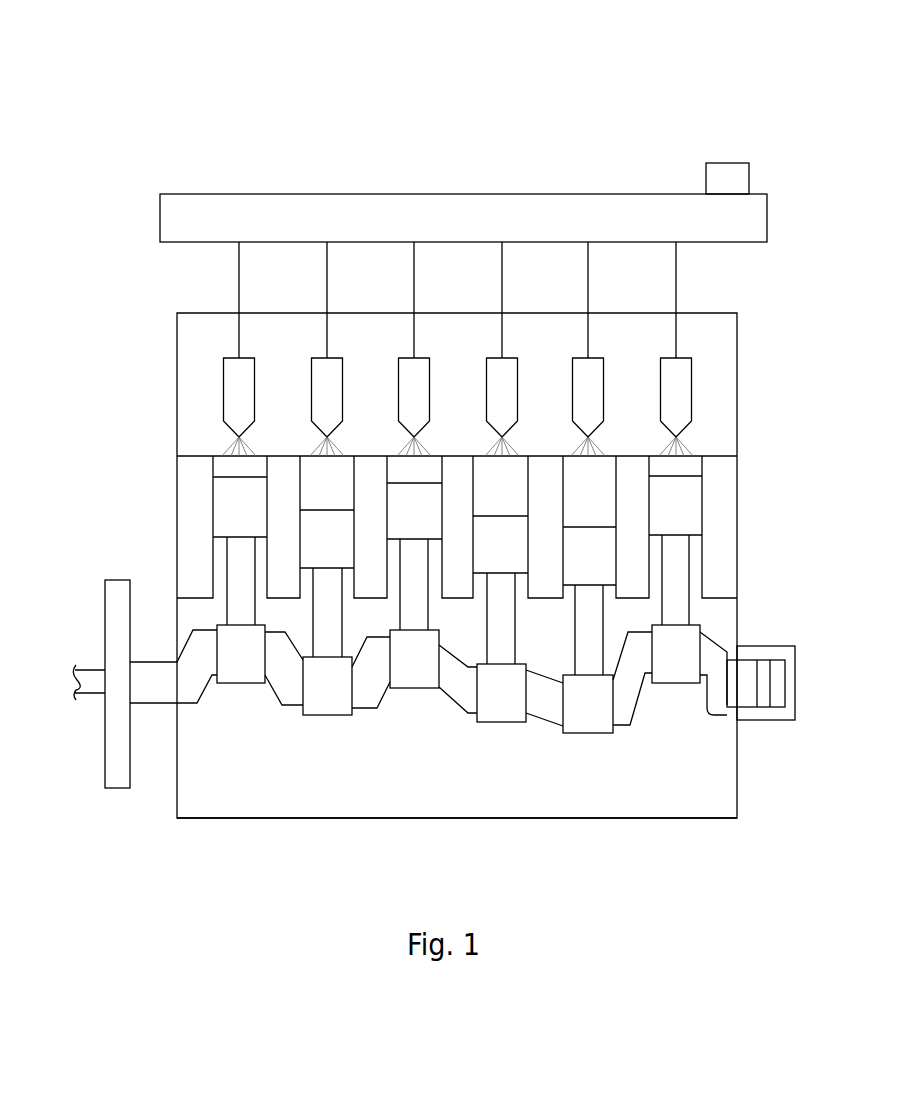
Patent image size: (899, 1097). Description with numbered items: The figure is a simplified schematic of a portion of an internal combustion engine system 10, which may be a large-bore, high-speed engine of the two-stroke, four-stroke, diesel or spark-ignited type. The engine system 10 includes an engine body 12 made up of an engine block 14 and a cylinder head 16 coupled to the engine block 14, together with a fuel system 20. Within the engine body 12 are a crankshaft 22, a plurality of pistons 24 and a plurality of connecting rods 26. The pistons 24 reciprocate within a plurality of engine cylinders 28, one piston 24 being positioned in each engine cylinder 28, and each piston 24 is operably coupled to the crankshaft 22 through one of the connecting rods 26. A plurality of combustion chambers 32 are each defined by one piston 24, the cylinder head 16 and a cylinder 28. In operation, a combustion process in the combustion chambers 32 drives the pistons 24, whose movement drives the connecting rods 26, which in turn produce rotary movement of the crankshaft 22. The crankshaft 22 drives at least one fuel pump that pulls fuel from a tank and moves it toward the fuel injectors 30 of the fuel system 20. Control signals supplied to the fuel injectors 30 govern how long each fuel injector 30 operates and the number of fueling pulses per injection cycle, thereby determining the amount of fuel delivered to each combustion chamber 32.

The internal combustion engine system 10 is at (471, 448).
The engine body 12 is at (760, 553).
The engine block 14 is at (740, 773).
The cylinder head 16 is at (742, 357).
The fuel system 20 is at (218, 386).
The crankshaft 22 is at (632, 693).
The piston 24 is at (502, 523).
The connecting rod 26 is at (683, 608).
The engine cylinder 28 is at (190, 502).
The fuel injector 30 is at (673, 383).
The combustion chamber 32 is at (325, 489).